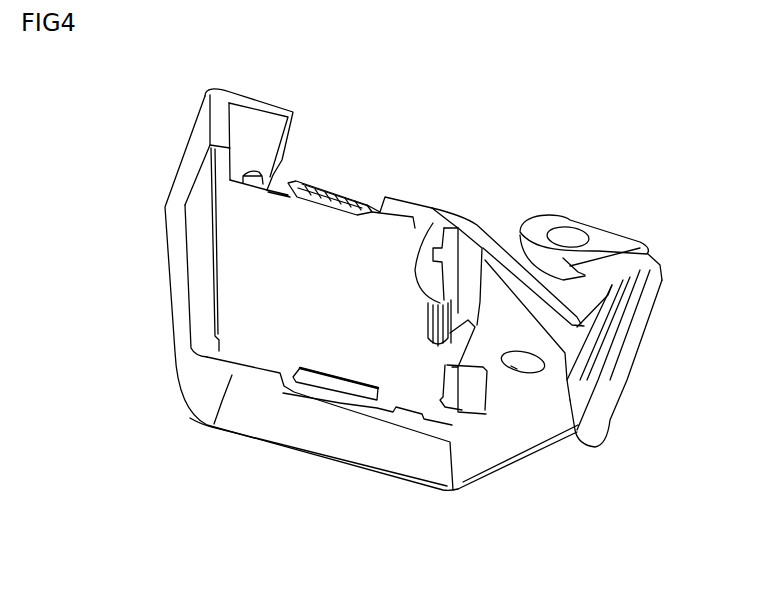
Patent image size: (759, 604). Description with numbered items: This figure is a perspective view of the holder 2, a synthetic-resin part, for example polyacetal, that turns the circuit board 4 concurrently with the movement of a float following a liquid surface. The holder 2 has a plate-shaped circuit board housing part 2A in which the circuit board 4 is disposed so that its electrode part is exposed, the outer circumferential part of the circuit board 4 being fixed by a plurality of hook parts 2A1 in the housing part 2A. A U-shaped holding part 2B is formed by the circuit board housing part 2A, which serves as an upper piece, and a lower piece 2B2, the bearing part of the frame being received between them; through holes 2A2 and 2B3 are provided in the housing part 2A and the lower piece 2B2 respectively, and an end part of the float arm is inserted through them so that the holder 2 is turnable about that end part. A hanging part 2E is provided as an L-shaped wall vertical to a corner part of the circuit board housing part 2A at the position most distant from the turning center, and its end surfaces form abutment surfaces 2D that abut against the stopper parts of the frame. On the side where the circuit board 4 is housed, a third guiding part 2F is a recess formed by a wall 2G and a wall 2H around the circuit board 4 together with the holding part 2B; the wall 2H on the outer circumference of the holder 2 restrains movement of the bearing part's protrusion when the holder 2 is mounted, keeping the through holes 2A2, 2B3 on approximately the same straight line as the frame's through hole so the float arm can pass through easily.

The holder 2 is at (470, 176).
The circuit board housing part 2A is at (177, 350).
The hook parts 2A1 is at (352, 192).
The through hole 2A2 is at (535, 372).
The holding part 2B is at (632, 348).
The lower piece 2B2 is at (547, 221).
The through hole 2B3 is at (577, 240).
The abutment surface 2D is at (208, 170).
The hanging part 2E is at (198, 125).
The third guiding part 2F is at (507, 420).
The wall 2G is at (200, 270).
The wall 2H is at (510, 275).
The circuit board 4 is at (237, 267).